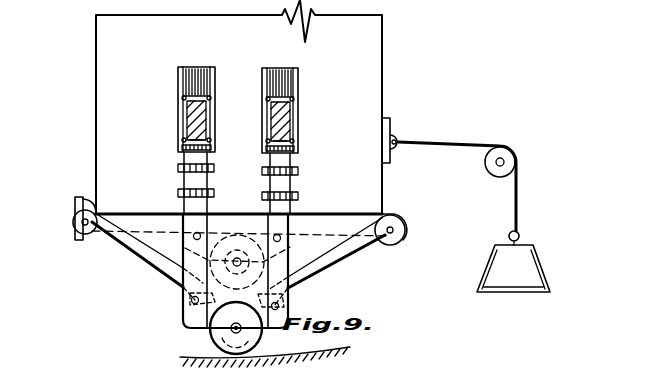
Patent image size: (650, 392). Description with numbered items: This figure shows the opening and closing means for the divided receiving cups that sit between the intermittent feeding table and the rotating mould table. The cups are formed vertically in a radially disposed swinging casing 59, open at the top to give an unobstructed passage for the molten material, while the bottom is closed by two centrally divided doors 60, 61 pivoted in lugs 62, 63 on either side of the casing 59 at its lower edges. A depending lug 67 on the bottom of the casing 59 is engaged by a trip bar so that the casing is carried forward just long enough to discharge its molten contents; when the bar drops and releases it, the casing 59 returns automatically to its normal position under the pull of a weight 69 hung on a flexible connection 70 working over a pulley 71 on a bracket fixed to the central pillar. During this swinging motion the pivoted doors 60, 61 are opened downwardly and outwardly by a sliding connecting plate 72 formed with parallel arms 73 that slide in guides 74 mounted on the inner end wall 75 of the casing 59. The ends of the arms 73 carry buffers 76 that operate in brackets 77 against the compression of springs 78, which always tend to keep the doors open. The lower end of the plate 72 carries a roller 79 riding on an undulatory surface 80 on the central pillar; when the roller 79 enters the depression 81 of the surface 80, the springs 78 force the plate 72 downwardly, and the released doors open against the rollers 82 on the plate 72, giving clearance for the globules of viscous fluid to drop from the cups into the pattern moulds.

The swinging casing 59 is at (372, 103).
The divided door 60 is at (328, 270).
The divided door 61 is at (152, 265).
The lug 62 is at (400, 229).
The lug 63 is at (74, 218).
The depending lug 67 is at (74, 236).
The weight 69 is at (524, 268).
The flexible connection 70 is at (518, 186).
The pulley 71 is at (513, 157).
The sliding connecting plate 72 is at (195, 315).
The parallel arms 73 is at (203, 206).
The guides 74 is at (207, 189).
The inner end wall 75 is at (210, 183).
The buffers 76 is at (209, 143).
The brackets 77 is at (211, 114).
The springs 78 is at (195, 119).
The roller 79 is at (248, 343).
The undulatory surface 80 is at (267, 363).
The depression 81 is at (205, 357).
The rollers 82 is at (192, 302).